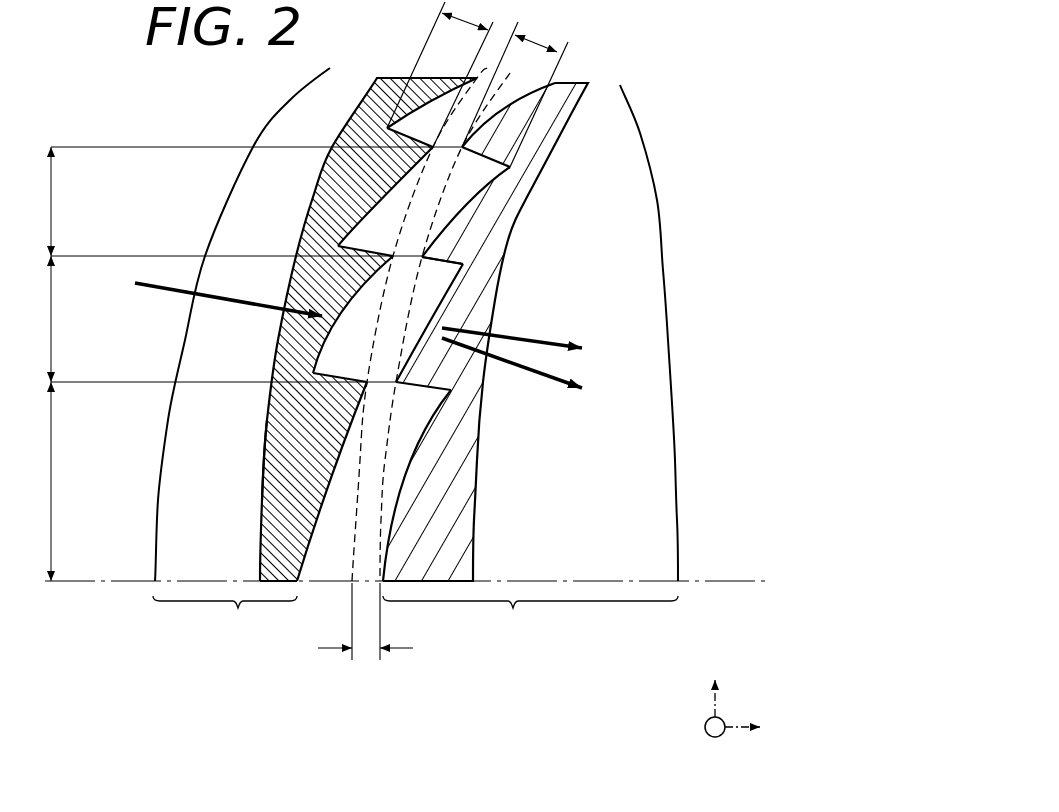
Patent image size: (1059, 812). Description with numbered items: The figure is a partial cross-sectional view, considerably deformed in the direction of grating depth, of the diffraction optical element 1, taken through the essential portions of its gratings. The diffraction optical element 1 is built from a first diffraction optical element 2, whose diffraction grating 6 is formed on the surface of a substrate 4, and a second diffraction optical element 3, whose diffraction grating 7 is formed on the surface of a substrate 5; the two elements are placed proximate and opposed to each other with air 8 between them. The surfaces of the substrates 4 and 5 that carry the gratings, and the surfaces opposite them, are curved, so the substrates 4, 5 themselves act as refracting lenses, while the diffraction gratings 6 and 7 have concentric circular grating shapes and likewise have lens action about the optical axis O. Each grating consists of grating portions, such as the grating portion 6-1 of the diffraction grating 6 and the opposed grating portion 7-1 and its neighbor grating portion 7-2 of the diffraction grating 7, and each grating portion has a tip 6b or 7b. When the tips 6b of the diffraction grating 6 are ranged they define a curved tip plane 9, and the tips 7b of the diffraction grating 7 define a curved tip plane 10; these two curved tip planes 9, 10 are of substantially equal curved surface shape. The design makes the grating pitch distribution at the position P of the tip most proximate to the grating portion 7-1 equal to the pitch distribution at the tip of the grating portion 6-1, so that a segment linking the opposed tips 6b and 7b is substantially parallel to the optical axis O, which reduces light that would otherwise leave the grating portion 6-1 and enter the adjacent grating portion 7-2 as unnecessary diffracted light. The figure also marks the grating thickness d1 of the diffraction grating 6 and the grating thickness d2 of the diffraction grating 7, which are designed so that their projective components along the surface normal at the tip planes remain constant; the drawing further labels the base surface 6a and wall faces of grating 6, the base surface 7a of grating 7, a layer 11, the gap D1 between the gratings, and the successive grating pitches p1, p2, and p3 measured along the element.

The diffraction optical element 1 is at (612, 65).
The first diffraction optical element 2 is at (315, 408).
The second diffraction optical element 3 is at (530, 363).
The substrate 4 is at (168, 555).
The substrate 5 is at (633, 535).
The diffraction grating 6 is at (317, 408).
The grating portion 6-1 is at (330, 173).
The base surface of first grating 6a is at (302, 553).
The tip 6b is at (392, 256).
The diffraction grating 7 is at (510, 332).
The grating portion 7-1 is at (495, 218).
The grating portion 7-2 is at (490, 302).
The base surface of second grating 7a is at (393, 507).
The tip 7b is at (423, 263).
The air 8 is at (338, 534).
The curved tip plane 9 is at (350, 203).
The curved tip plane 10 is at (522, 197).
The second grating layer 11 is at (508, 262).
The position of the tip of the grating P is at (383, 78).
The air gap between gratings D1 is at (414, 378).
The grating thickness d1 is at (440, 73).
The grating thickness d2 is at (515, 92).
The first grating pitch p1 is at (209, 481).
The second grating pitch p2 is at (221, 319).
The third grating pitch p3 is at (241, 201).
The optical axis O is at (788, 582).